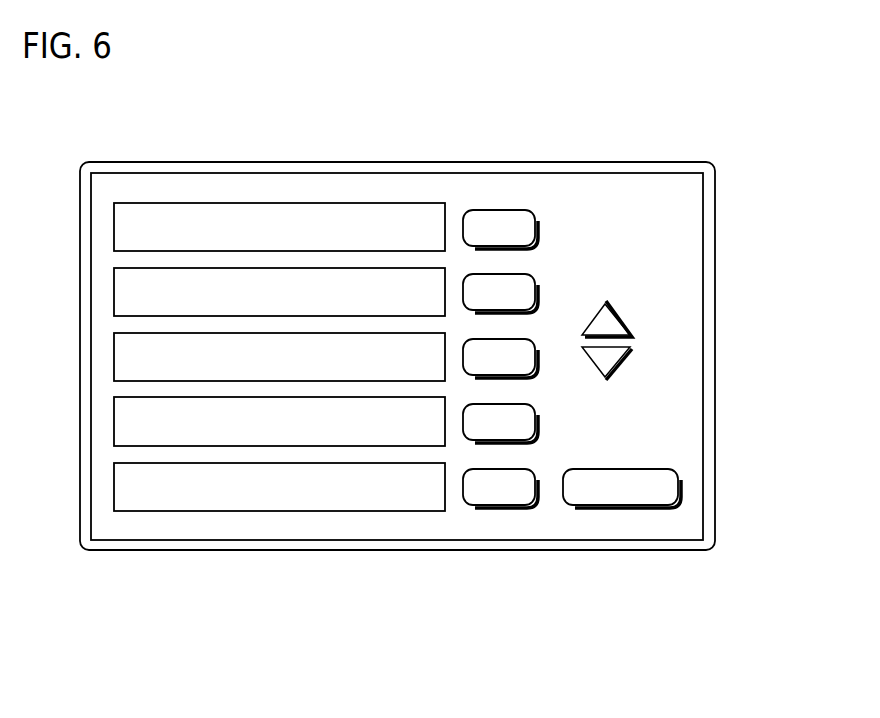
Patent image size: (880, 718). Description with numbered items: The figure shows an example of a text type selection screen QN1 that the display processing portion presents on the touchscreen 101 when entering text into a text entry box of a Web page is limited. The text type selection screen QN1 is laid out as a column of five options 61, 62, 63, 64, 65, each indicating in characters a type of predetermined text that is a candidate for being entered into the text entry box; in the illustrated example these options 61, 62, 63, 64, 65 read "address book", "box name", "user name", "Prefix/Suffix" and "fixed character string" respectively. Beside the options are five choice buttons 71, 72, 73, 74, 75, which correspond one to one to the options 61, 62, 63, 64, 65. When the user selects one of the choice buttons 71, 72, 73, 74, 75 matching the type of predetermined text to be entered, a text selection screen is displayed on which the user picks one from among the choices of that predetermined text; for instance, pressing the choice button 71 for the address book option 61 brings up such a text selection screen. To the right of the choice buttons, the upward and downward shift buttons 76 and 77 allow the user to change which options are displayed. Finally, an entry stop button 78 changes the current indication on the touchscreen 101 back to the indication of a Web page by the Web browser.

The touchscreen 101 is at (220, 162).
The text type selection screen QN1 is at (382, 173).
The option 61 is at (114, 225).
The option 62 is at (114, 290).
The option 63 is at (114, 355).
The option 64 is at (114, 420).
The option 65 is at (114, 485).
The choice button 71 is at (522, 217).
The choice button 72 is at (528, 293).
The choice button 73 is at (520, 352).
The choice button 74 is at (523, 423).
The choice button 75 is at (522, 502).
The shift button 76 is at (617, 317).
The shift button 77 is at (618, 365).
The entry stop button 78 is at (647, 500).